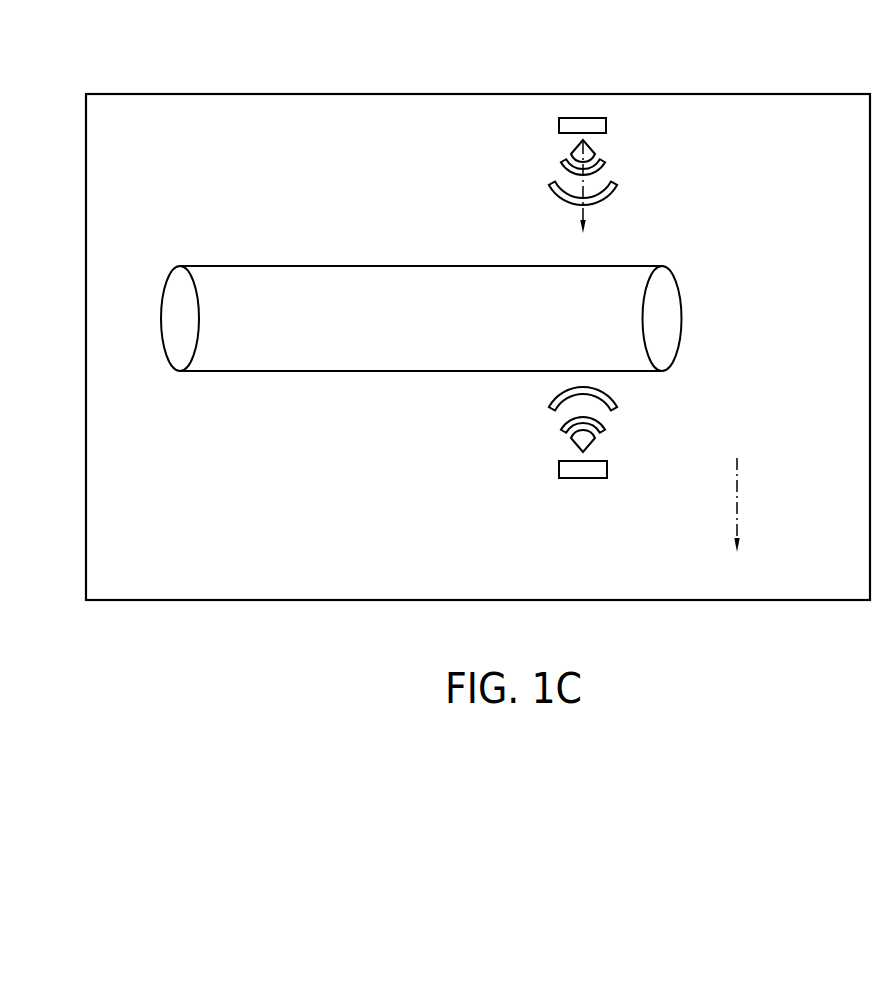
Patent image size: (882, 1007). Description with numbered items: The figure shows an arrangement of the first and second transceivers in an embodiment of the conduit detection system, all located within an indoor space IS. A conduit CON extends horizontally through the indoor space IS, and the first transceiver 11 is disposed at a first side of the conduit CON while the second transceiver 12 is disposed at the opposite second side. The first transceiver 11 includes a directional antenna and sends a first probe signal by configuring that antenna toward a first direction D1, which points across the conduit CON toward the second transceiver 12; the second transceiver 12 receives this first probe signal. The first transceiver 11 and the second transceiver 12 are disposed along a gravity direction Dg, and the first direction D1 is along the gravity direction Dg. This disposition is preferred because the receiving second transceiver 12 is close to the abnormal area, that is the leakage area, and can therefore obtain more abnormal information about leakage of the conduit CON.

The indoor space IS is at (386, 94).
The conduit CON is at (453, 265).
The first transceiver 11 is at (607, 125).
The second transceiver 12 is at (583, 478).
The first direction D1 is at (602, 195).
The gravity direction Dg is at (757, 513).